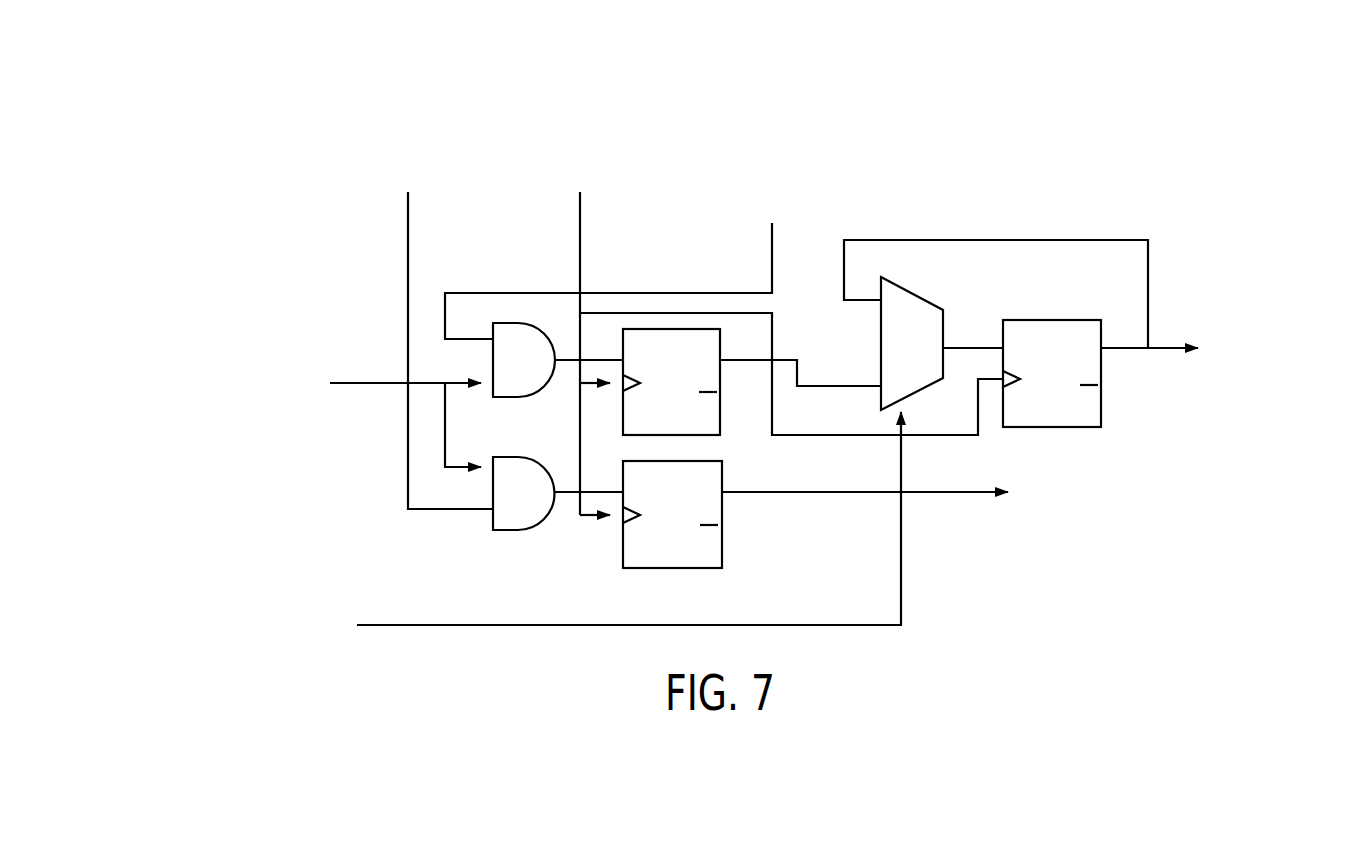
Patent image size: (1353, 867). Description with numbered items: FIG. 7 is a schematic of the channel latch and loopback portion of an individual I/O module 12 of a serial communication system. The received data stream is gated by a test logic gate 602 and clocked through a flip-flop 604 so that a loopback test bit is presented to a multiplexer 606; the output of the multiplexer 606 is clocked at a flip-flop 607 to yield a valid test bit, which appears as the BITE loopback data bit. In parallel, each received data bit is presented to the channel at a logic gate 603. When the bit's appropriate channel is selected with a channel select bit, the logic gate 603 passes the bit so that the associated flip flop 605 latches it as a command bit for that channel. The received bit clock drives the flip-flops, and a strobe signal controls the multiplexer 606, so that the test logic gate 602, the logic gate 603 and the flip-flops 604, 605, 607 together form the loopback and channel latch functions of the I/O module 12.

The I/O module 12 is at (1078, 100).
The test logic gate 602 is at (522, 323).
The logic gate 603 is at (528, 457).
The flip-flop 604 is at (720, 337).
The flip flop 605 is at (700, 461).
The multiplexer 606 is at (930, 300).
The flip-flop 607 is at (1052, 320).